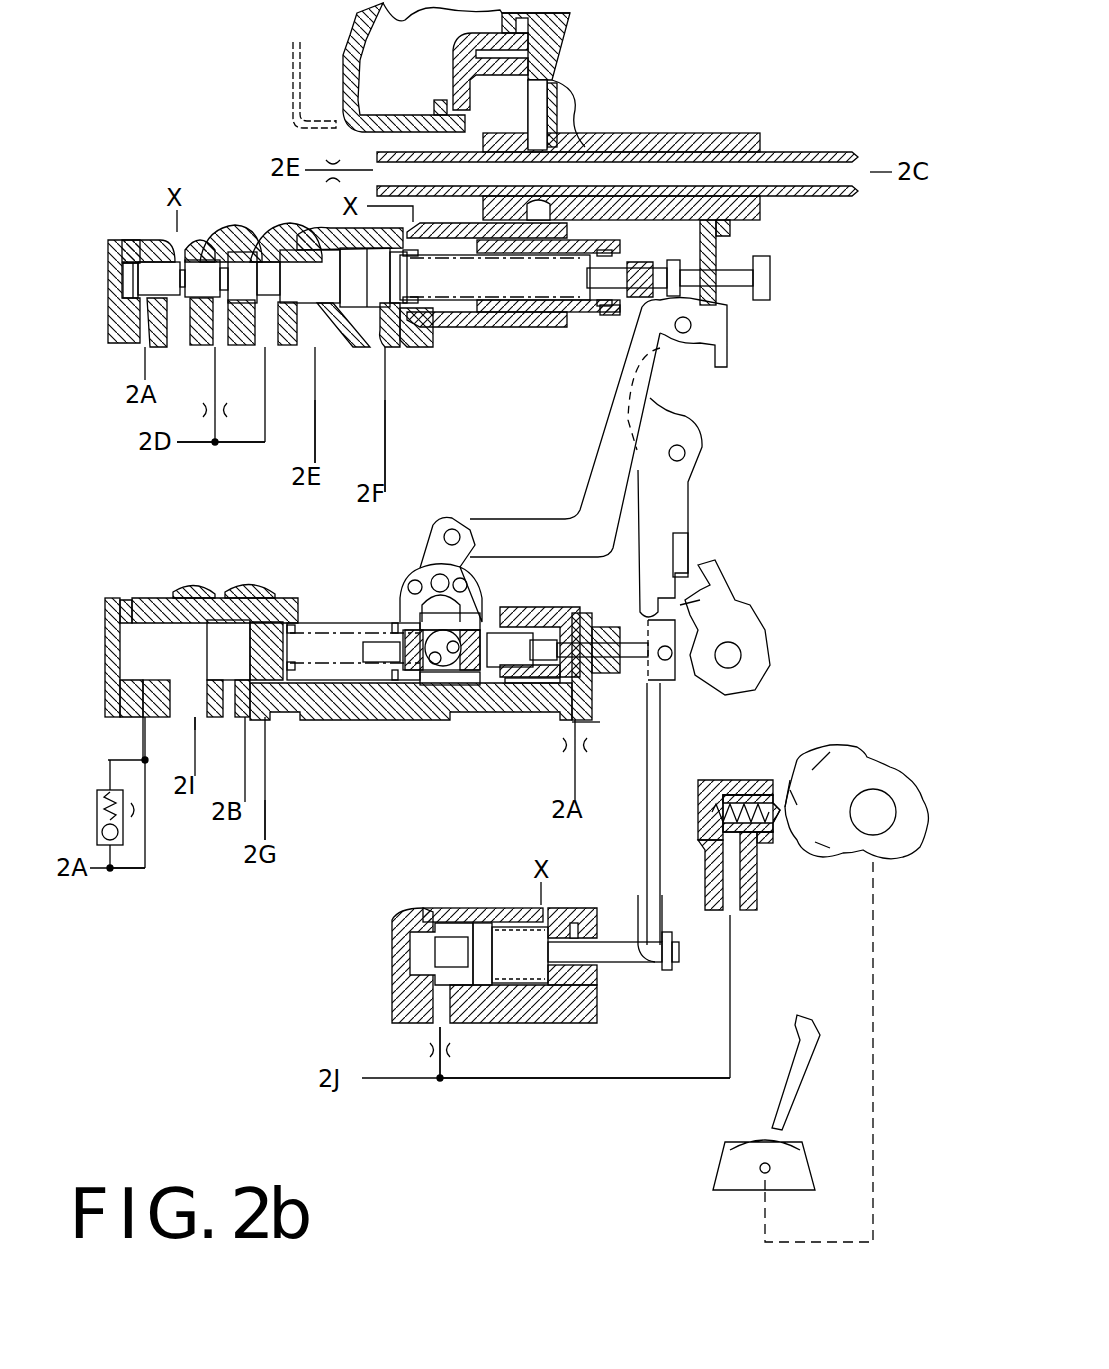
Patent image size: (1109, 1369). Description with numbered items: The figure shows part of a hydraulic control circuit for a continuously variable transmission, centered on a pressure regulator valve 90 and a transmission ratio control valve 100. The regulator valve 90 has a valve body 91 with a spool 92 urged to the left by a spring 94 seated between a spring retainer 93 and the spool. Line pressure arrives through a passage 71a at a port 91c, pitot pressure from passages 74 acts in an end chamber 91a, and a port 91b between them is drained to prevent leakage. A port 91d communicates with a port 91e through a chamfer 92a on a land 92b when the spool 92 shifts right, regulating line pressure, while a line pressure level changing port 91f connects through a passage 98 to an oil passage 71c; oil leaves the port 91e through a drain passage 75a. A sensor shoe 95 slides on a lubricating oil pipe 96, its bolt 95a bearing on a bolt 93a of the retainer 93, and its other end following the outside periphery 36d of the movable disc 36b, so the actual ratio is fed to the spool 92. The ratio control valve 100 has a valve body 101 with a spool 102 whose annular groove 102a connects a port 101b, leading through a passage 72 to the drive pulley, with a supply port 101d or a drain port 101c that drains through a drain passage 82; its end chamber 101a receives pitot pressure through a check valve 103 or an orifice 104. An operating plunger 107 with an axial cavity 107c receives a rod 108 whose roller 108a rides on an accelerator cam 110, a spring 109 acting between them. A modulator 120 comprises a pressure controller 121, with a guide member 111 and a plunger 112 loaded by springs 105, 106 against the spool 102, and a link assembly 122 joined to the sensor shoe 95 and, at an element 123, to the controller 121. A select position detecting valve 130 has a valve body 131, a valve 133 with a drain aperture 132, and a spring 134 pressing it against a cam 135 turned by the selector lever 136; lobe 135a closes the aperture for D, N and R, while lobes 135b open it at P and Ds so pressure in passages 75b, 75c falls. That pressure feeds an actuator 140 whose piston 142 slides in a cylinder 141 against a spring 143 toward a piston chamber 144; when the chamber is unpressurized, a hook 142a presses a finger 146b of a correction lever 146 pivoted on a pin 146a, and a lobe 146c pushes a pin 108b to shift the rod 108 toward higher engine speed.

The movable disc 36b is at (557, 33).
The outside periphery 36d is at (549, 82).
The lubricating oil pipe 96 is at (798, 150).
The pressure regulator valve 90 is at (441, 333).
The valve body 91 is at (140, 240).
The end chamber 91a is at (140, 345).
The port 91b is at (185, 232).
The port 91c is at (215, 345).
The port 91d is at (255, 345).
The port 91e is at (302, 345).
The line pressure level changing port 91f is at (375, 347).
The spool 92 is at (127, 275).
The chamfer 92a is at (298, 262).
The land 92b is at (245, 248).
The spring retainer 93 is at (545, 327).
The bolt 93a is at (652, 270).
The spring 94 is at (604, 318).
The sensor shoe 95 is at (728, 330).
The bolt 95a is at (766, 275).
The passage 71a is at (180, 446).
The drain passage 75a is at (338, 442).
The passage 98 is at (388, 462).
The link assembly 122 is at (604, 466).
The modulator 120 is at (522, 518).
The pivot pin 123 is at (446, 531).
The pressure controller 121 is at (420, 560).
The correction lever 146 is at (688, 520).
The pin 146a is at (686, 455).
The lobe 146c is at (712, 630).
The cam 110 is at (748, 612).
The valve body 101 is at (120, 625).
The end chamber 101a is at (118, 695).
The port 101b is at (250, 720).
The drain port 101c is at (137, 717).
The port 101d is at (268, 712).
The spool 102 is at (175, 598).
The annular groove 102a is at (248, 598).
The spring 105 is at (312, 620).
The spring 106 is at (325, 630).
The operating plunger 107 is at (520, 610).
The axial cavity 107c is at (530, 632).
The rod 108 is at (585, 690).
The roller 108a is at (672, 680).
The pin 108b is at (660, 700).
The spring 109 is at (520, 688).
The guide member 111 is at (455, 690).
The plunger 112 is at (430, 672).
The transmission ratio control valve 100 is at (598, 726).
The drain passage 82 is at (162, 746).
The passage 72 is at (230, 762).
The oil passage 71c is at (266, 825).
The passages 74 is at (130, 870).
The check valve 103 is at (97, 805).
The orifice 104 is at (147, 808).
The select position detecting valve 130 is at (780, 730).
The valve body 131 is at (700, 783).
The drain aperture 132 is at (762, 795).
The valve 133 is at (752, 850).
The spring 134 is at (705, 832).
The cam 135 is at (905, 780).
The lobe 135a is at (792, 790).
The lobes 135b is at (838, 750).
The selector lever 136 is at (800, 1013).
The actuator 140 is at (592, 1018).
The cylinder 141 is at (458, 908).
The piston 142 is at (490, 985).
The hook 142a is at (666, 970).
The spring 143 is at (552, 985).
The piston chamber 144 is at (422, 912).
The finger 146b is at (652, 975).
The passage 75b is at (562, 1082).
The passage 75c is at (425, 1048).